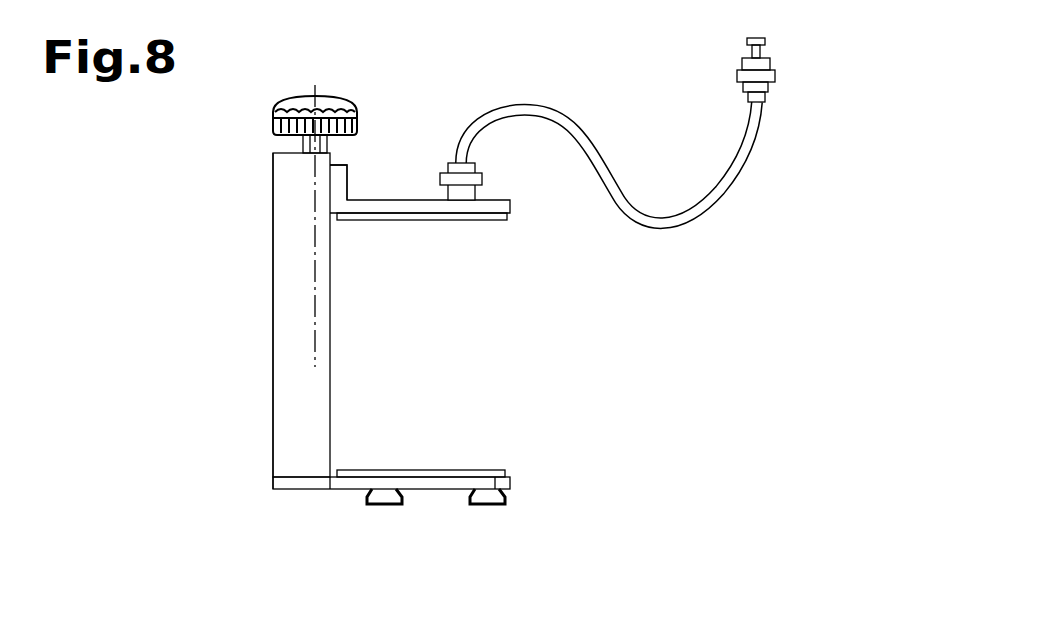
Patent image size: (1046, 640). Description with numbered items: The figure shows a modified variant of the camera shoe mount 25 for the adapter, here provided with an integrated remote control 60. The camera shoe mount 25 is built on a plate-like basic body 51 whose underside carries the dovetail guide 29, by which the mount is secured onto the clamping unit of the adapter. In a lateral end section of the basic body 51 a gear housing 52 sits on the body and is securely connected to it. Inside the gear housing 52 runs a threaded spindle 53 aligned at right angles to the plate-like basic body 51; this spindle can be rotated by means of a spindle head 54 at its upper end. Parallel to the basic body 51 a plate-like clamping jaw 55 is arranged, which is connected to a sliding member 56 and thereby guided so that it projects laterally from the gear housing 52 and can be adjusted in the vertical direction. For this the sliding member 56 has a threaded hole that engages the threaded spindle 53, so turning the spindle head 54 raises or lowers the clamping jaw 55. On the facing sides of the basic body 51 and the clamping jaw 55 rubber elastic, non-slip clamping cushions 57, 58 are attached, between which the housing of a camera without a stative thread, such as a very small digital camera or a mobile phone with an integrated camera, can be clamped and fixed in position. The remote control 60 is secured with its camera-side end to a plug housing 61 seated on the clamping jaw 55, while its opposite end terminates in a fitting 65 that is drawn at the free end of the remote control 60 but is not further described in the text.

The camera shoe mount 25 is at (263, 368).
The dovetail guide 29 is at (363, 508).
The plate-like basic body 51 is at (522, 480).
The gear housing 52 is at (258, 257).
The threaded spindle 53 is at (293, 145).
The spindle head 54 is at (360, 117).
The plate-like clamping jaw 55 is at (520, 215).
The sliding member 56 is at (357, 190).
The clamping cushion 57 is at (452, 230).
The clamping cushion 58 is at (493, 462).
The remote control 60 is at (738, 210).
The plug housing 61 is at (485, 167).
The hose end fitting 65 is at (727, 57).